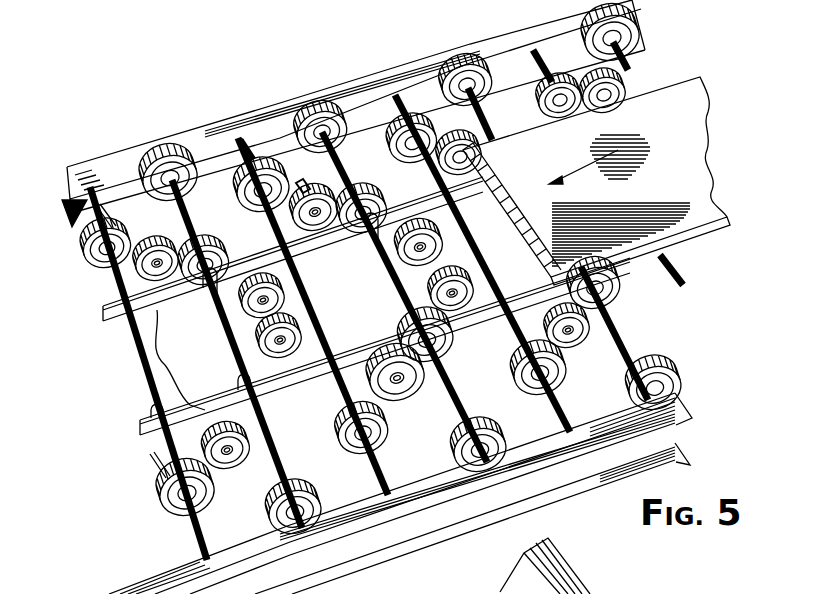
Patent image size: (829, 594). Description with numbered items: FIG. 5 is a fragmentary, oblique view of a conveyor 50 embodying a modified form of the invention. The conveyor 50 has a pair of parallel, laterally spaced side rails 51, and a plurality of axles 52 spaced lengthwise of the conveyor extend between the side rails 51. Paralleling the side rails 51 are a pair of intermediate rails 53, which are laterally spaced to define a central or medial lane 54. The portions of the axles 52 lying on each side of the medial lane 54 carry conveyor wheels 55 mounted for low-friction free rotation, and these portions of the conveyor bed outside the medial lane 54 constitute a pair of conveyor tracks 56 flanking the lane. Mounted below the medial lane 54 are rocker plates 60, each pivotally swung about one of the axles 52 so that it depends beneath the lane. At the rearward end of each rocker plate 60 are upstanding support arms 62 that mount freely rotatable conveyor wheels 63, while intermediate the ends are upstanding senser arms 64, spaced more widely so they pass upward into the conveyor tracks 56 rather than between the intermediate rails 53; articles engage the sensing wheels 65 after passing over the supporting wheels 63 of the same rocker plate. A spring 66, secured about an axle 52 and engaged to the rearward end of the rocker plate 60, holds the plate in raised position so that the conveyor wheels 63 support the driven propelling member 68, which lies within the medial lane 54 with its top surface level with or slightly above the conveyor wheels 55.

The conveyor 50 is at (240, 113).
The side rails 51 is at (346, 88).
The axles 52 is at (193, 534).
The intermediate rails 53 is at (101, 316).
The medial lane 54 is at (124, 366).
The conveyor wheels 55 is at (358, 193).
The conveyor tracks 56 is at (107, 278).
The rocker plates 60 is at (190, 374).
The support arms 62 is at (457, 305).
The conveyor wheels 63 is at (410, 227).
The senser arms 64 is at (322, 222).
The sensing wheels 65 is at (302, 182).
The spring 66 is at (300, 311).
The propelling member 68 is at (702, 157).